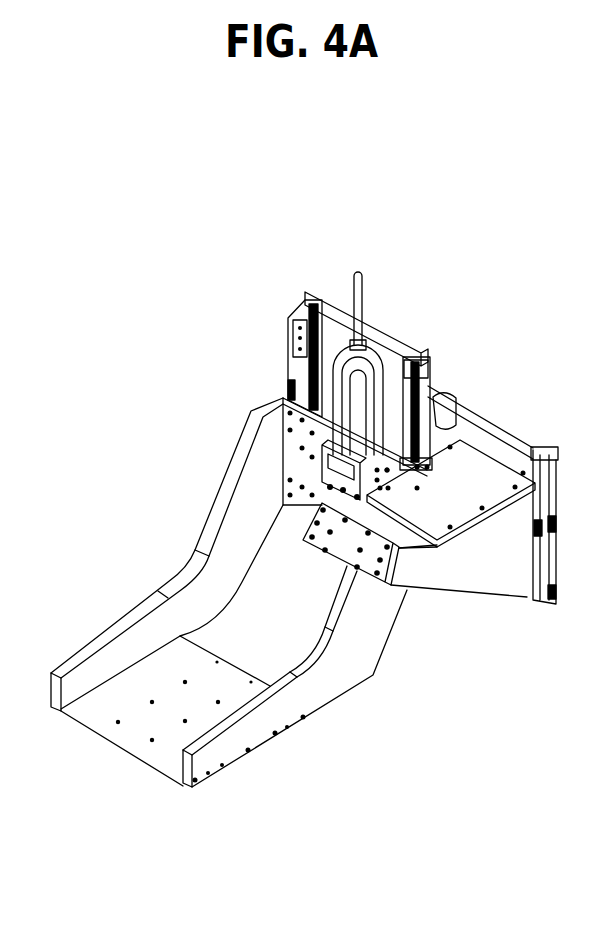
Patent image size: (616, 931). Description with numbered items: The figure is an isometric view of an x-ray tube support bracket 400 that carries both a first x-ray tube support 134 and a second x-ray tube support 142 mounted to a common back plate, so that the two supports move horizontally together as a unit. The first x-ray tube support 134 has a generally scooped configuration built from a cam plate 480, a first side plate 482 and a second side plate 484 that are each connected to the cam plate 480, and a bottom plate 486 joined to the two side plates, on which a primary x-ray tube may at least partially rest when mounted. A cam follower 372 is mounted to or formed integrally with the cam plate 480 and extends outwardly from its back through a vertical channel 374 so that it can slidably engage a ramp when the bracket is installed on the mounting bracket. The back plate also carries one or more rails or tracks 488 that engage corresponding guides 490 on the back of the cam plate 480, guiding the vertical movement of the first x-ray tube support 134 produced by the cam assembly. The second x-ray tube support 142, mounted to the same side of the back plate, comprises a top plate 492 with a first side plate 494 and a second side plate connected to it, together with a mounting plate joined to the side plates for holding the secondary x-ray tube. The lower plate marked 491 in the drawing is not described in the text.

The first x-ray tube support 134 is at (387, 326).
The second x-ray tube support 142 is at (488, 468).
The cam follower 372 is at (292, 323).
The vertical channel 374 is at (350, 373).
The x-ray tube support bracket 400 is at (486, 362).
The cam plate 480 is at (300, 457).
The first side plate 482 is at (242, 515).
The second side plate 484 is at (348, 646).
The bottom plate 486 is at (131, 727).
The rails or tracks 488 is at (310, 318).
The guides 490 is at (418, 456).
The lower plate 491 is at (404, 584).
The top plate 492 is at (449, 504).
The first side plate 494 is at (508, 577).